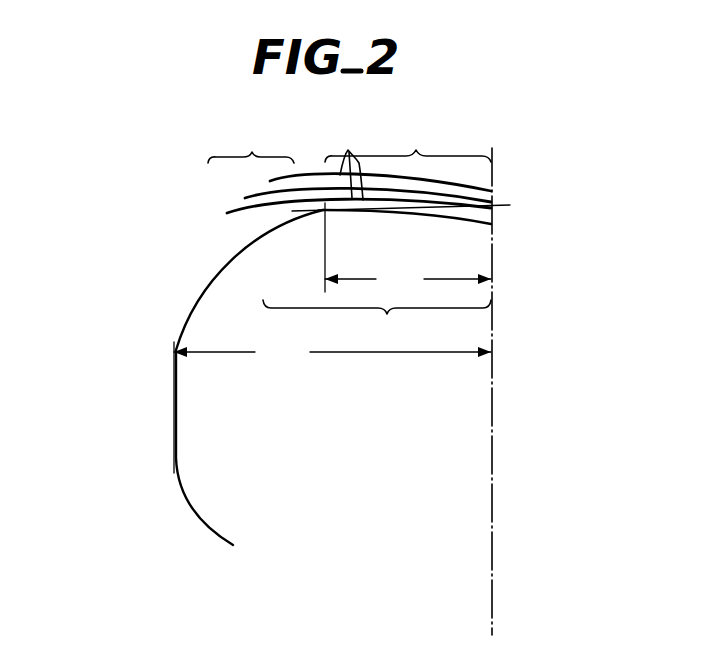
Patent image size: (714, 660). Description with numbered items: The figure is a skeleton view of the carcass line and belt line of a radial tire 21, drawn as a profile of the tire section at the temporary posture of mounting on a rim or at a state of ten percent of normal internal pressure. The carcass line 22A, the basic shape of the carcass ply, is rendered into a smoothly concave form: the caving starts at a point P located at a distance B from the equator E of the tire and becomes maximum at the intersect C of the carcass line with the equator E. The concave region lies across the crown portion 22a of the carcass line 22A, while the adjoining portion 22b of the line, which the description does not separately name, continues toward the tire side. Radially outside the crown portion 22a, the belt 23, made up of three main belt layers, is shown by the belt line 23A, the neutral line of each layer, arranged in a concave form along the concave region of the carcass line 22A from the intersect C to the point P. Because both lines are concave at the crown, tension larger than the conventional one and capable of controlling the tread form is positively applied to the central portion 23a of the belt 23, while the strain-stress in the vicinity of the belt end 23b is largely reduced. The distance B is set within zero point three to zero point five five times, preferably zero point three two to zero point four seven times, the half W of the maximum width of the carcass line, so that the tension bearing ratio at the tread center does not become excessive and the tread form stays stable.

The radial tire 21 is at (545, 160).
The carcass line 22A is at (196, 298).
The crown portion 22a is at (386, 278).
The flat portion of outer cutter 22b is at (423, 218).
The belt 23 is at (206, 191).
The belt line 23A is at (350, 159).
The central portion 23a is at (408, 141).
The belt end 23b is at (251, 142).
The point P is at (327, 214).
The equator E is at (493, 173).
The intersect C is at (493, 225).
The distance B is at (408, 281).
The half of maximum width of the carcass line W is at (332, 407).